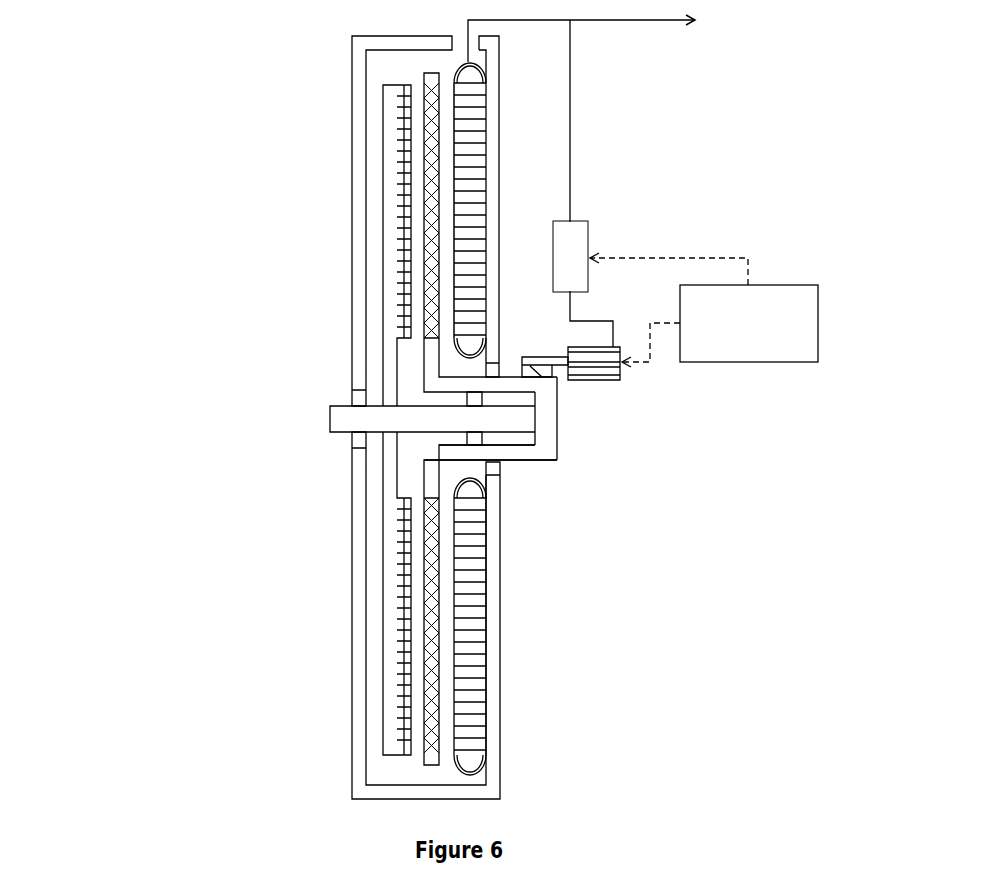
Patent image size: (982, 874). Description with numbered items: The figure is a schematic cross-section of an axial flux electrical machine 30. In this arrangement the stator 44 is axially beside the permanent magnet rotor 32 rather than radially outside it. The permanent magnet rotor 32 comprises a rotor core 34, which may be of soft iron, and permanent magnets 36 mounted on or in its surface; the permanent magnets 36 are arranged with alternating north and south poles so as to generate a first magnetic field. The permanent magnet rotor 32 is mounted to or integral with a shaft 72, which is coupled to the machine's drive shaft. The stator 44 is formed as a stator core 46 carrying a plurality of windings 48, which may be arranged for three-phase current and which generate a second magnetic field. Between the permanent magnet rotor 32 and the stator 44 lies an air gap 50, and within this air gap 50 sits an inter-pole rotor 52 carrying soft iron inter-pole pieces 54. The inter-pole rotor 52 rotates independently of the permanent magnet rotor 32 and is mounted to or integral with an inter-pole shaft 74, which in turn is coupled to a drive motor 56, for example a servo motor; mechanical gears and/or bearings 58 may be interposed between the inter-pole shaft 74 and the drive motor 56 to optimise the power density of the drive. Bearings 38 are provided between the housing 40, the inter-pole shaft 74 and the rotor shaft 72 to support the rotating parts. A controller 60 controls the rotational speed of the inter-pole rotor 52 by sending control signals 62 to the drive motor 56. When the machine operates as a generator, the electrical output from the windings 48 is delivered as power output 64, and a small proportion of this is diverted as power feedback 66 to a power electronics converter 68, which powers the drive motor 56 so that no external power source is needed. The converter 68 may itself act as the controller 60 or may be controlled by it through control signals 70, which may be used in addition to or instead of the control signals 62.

The electrical machine 30 is at (150, 168).
The permanent magnet rotor 32 is at (380, 698).
The rotor core 34 is at (383, 192).
The permanent magnets 36 is at (400, 250).
The bearings 38 is at (505, 389).
The housing 40 is at (358, 123).
The stator 44 is at (492, 607).
The stator core 46 is at (467, 575).
The windings 48 is at (478, 760).
The air gap 50 is at (413, 375).
The inter-pole rotor 52 is at (425, 472).
The inter-pole pieces 54 is at (425, 672).
The drive motor 56 is at (598, 375).
The mechanical gears and/or bearings 58 is at (528, 368).
The controller 60 is at (792, 298).
The control signals 62 is at (668, 323).
The power output 64 is at (512, 22).
The power feedback 66 is at (570, 62).
The power electronics converter 68 is at (560, 248).
The control signals 70 is at (694, 255).
The shaft 72 is at (353, 421).
The inter-pole shaft 74 is at (541, 451).